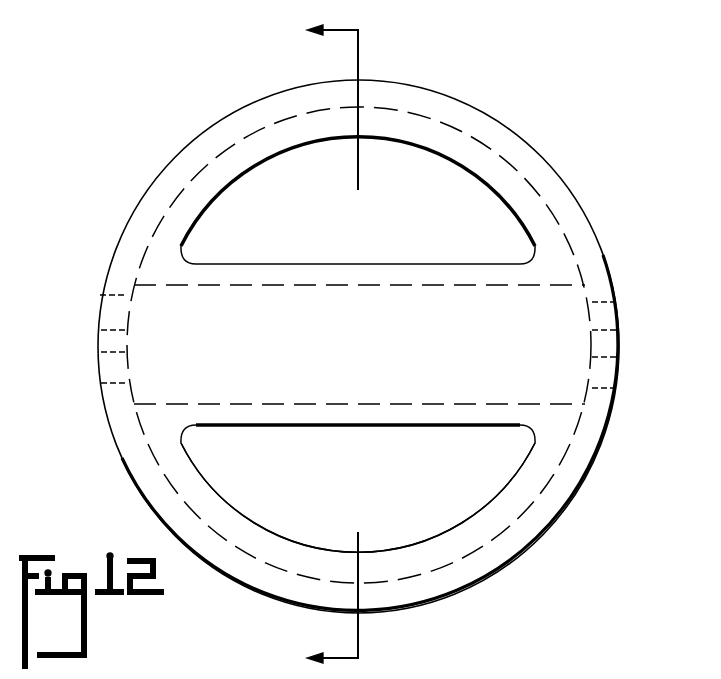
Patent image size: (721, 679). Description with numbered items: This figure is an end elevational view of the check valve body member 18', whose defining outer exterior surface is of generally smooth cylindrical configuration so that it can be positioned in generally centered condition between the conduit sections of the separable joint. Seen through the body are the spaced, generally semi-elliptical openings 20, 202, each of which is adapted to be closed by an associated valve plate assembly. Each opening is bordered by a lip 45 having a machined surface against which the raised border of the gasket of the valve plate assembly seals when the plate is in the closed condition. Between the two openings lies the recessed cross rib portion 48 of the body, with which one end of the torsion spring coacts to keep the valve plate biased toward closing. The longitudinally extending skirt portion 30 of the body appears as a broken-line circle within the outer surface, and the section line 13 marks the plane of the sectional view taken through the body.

The section line 13- 13 is at (314, 345).
The body member 18' is at (397, 346).
The semi-elliptical opening 20 is at (412, 190).
The lower window opening 202 is at (437, 510).
The skirt portion 30 is at (418, 100).
The lip 45 is at (308, 132).
The recessed cross rib portion 48 is at (359, 344).